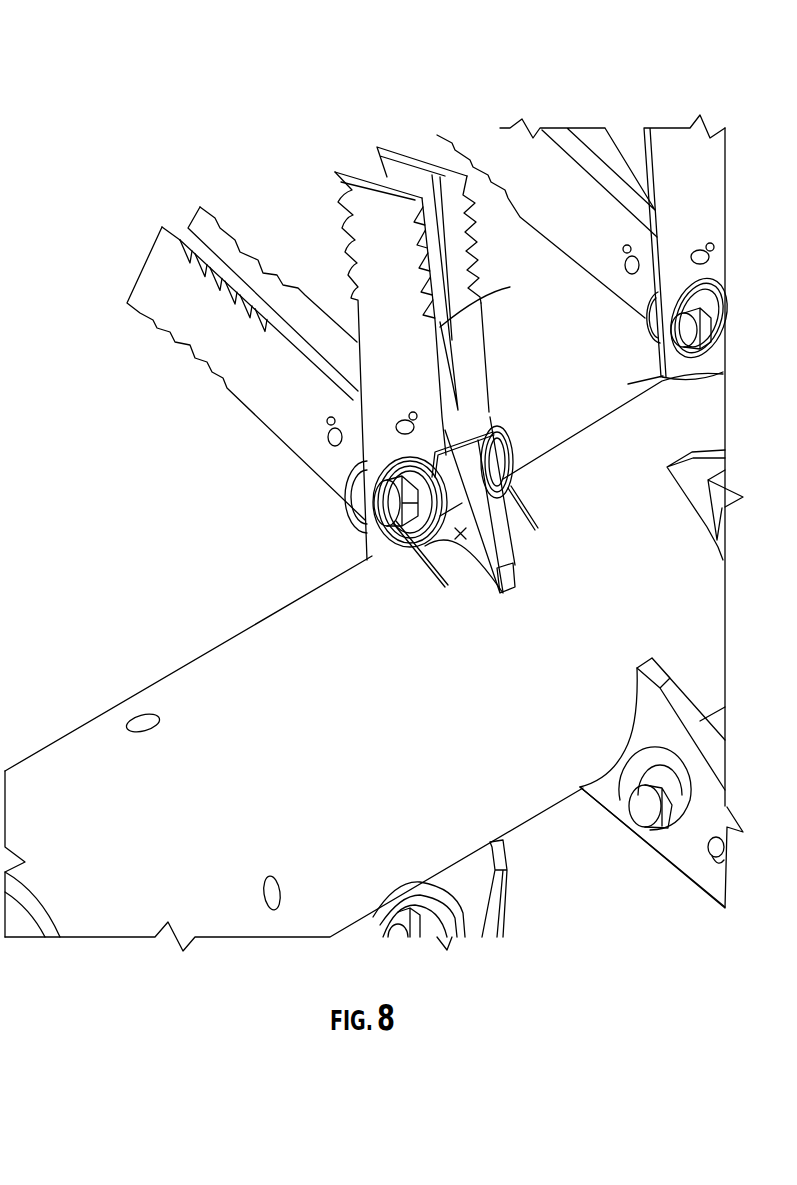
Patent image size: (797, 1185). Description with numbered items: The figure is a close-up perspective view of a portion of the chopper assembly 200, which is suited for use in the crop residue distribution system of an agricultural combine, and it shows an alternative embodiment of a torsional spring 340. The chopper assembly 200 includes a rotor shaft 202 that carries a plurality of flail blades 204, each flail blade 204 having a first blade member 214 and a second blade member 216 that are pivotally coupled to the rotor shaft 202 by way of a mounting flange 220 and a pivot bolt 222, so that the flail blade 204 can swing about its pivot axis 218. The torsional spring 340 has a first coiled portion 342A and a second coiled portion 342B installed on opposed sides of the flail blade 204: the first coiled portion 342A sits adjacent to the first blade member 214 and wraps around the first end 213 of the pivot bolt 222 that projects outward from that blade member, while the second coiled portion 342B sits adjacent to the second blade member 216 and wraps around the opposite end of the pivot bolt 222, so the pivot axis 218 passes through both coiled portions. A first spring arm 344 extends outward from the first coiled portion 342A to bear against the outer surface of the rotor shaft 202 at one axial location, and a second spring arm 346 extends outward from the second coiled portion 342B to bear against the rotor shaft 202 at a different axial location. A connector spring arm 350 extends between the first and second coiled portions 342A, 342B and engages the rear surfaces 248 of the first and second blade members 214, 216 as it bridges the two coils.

The chopper assembly 200 is at (64, 82).
The rotor shaft 202 is at (110, 928).
The flail blade 204 is at (319, 214).
The first end 213 is at (393, 525).
The first blade member 214 is at (353, 247).
The second blade member 216 is at (200, 222).
The pivot axis 218 is at (365, 518).
The mounting flange 220 is at (515, 557).
The pivot bolt 222 is at (352, 488).
The rear surface 248 is at (512, 284).
The torsional spring 340 is at (470, 489).
The first coiled portion 342A is at (395, 450).
The second coiled portion 342B is at (493, 422).
The first spring arm 344 is at (433, 583).
The second spring arm 346 is at (523, 512).
The connector spring arm 350 is at (487, 425).